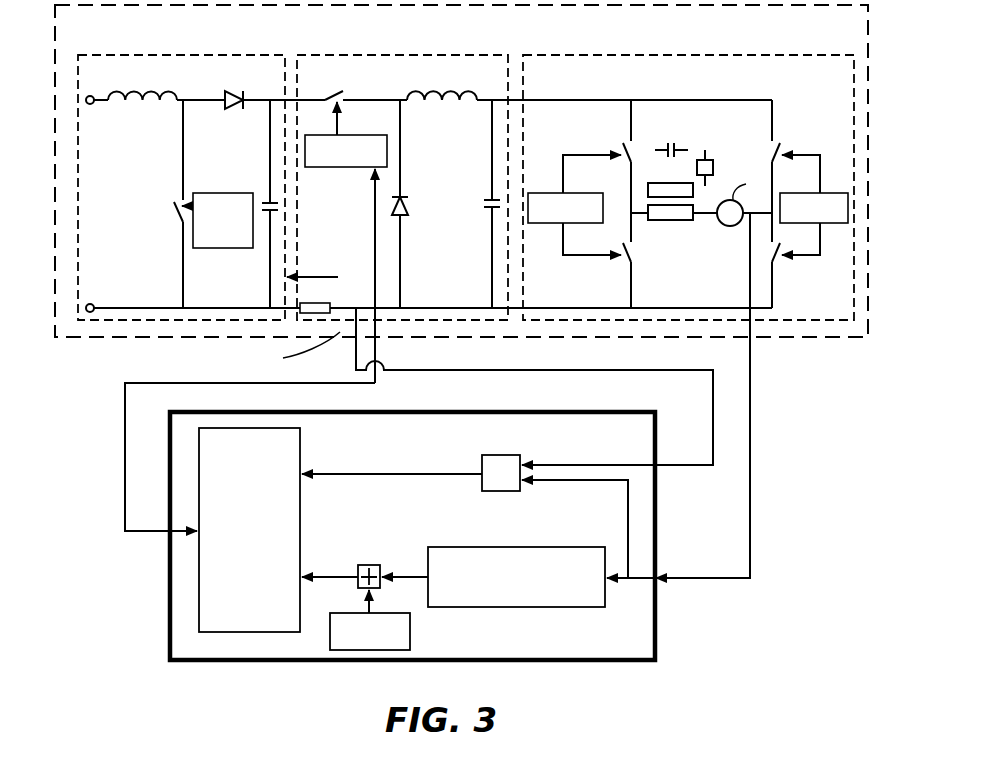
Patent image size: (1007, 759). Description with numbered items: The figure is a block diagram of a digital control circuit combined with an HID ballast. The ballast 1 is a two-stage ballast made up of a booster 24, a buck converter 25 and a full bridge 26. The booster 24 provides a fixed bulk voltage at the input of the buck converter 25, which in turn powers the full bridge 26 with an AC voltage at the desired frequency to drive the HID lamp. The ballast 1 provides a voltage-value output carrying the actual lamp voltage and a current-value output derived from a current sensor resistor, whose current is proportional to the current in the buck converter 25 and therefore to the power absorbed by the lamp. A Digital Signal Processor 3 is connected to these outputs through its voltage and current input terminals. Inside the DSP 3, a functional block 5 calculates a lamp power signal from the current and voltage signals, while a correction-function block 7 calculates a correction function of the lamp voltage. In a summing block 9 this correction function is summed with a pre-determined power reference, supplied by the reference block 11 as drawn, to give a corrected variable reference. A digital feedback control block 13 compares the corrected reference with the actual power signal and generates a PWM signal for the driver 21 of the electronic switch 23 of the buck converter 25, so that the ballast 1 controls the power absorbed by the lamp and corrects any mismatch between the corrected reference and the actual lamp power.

The ballast 1 is at (789, 350).
The Digital Signal Processor 3 is at (425, 535).
The functional block 5 is at (503, 456).
The correction-function block 7 is at (440, 548).
The summing block 9 is at (371, 565).
The power reference Pref 11 is at (410, 632).
The digital feedback control block 13 is at (261, 621).
The driver 21 is at (325, 167).
The electronic switch 23 is at (330, 95).
The booster 24 is at (88, 275).
The buck converter 25 is at (529, 242).
The full bridge 26 is at (778, 58).